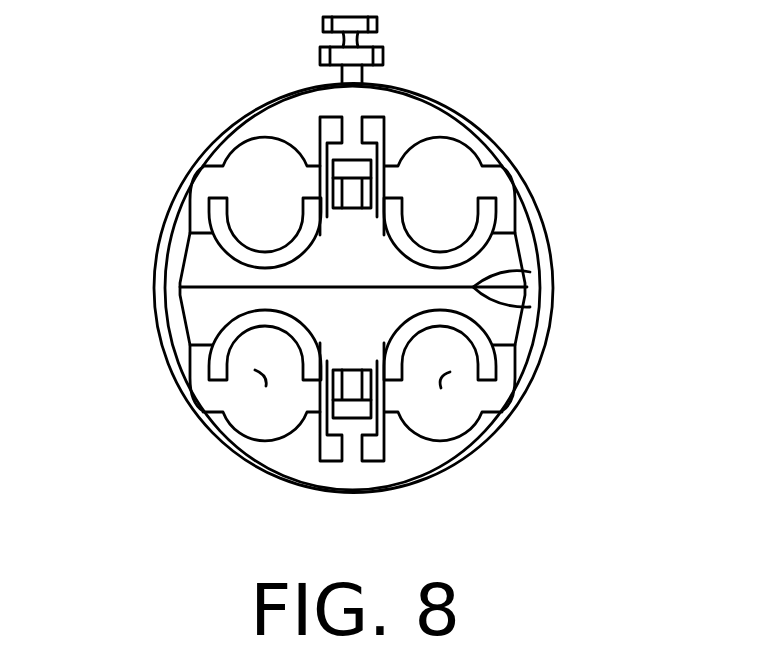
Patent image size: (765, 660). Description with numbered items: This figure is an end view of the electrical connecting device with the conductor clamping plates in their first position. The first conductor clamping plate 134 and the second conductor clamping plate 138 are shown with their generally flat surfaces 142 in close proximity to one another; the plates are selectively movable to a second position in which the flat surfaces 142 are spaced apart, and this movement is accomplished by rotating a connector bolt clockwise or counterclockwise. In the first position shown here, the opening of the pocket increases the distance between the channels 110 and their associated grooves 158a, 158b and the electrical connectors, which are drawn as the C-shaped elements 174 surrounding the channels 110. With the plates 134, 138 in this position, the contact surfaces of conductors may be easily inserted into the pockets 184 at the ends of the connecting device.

The channel 110 is at (262, 136).
The first conductor clamping plate 134 is at (377, 264).
The second conductor clamping plate 138 is at (377, 336).
The generally flat surface 142 is at (530, 272).
The groove 158a is at (260, 263).
The groove 158b is at (437, 265).
The clamp fingers 174 is at (213, 205).
The pocket 184 is at (263, 383).